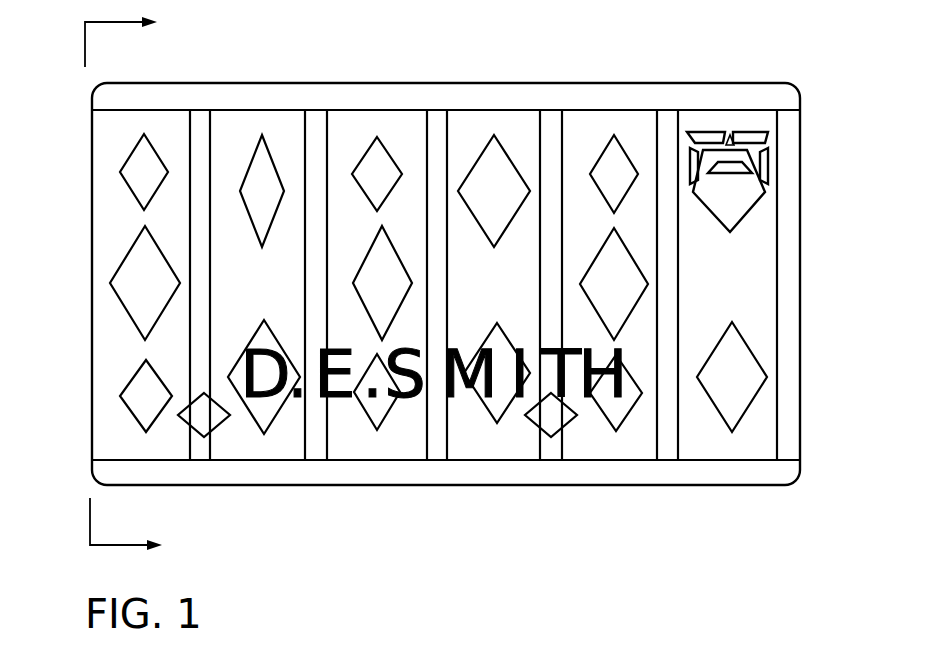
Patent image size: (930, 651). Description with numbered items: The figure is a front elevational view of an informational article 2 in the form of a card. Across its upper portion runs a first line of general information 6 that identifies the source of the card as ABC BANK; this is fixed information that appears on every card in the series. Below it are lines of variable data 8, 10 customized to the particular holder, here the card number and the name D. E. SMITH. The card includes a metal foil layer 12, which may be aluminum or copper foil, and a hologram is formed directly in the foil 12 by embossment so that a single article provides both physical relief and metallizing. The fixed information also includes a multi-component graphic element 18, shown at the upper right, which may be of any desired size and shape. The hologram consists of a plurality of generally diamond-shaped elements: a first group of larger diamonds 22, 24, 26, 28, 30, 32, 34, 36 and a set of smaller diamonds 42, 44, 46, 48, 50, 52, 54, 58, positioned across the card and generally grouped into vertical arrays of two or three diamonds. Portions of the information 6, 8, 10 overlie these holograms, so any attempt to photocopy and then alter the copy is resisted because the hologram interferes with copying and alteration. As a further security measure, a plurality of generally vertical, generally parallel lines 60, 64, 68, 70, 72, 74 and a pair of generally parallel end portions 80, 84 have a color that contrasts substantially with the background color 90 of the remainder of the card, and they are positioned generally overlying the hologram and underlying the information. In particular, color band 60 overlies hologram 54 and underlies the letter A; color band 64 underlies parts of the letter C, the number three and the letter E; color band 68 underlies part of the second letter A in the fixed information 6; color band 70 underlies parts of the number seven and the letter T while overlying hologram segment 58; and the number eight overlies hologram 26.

The informational article 2 is at (810, 27).
The first line of general information 6 is at (195, 205).
The line of variable data 8 is at (212, 295).
The line of variable data 10 is at (260, 427).
The metal foil layer 12 is at (760, 268).
The multi-component graphic element 18 is at (768, 163).
The diamond-shaped hologram element 22 is at (745, 372).
The diamond-shaped hologram element 24 is at (743, 217).
The diamond-shaped hologram element 26 is at (615, 247).
The diamond-shaped hologram element 28 is at (493, 137).
The diamond-shaped hologram element 30 is at (120, 268).
The diamond-shaped hologram element 32 is at (347, 423).
The diamond-shaped hologram element 34 is at (278, 410).
The diamond-shaped hologram element 36 is at (262, 140).
The smaller diamond hologram element 42 is at (610, 157).
The smaller diamond hologram element 44 is at (613, 413).
The smaller diamond hologram element 46 is at (380, 423).
The smaller diamond hologram element 48 is at (375, 137).
The smaller diamond hologram element 50 is at (125, 162).
The smaller diamond hologram element 52 is at (133, 400).
The smaller diamond hologram element 54 is at (187, 413).
The smaller diamond hologram element 58 is at (570, 430).
The color band 60 is at (197, 125).
The color band 64 is at (313, 127).
The color band 68 is at (435, 120).
The color band 70 is at (548, 120).
The color band 72 is at (663, 130).
The color band 74 is at (787, 135).
The end portion 80 is at (757, 472).
The end portion 84 is at (108, 95).
The background color 90 is at (760, 437).